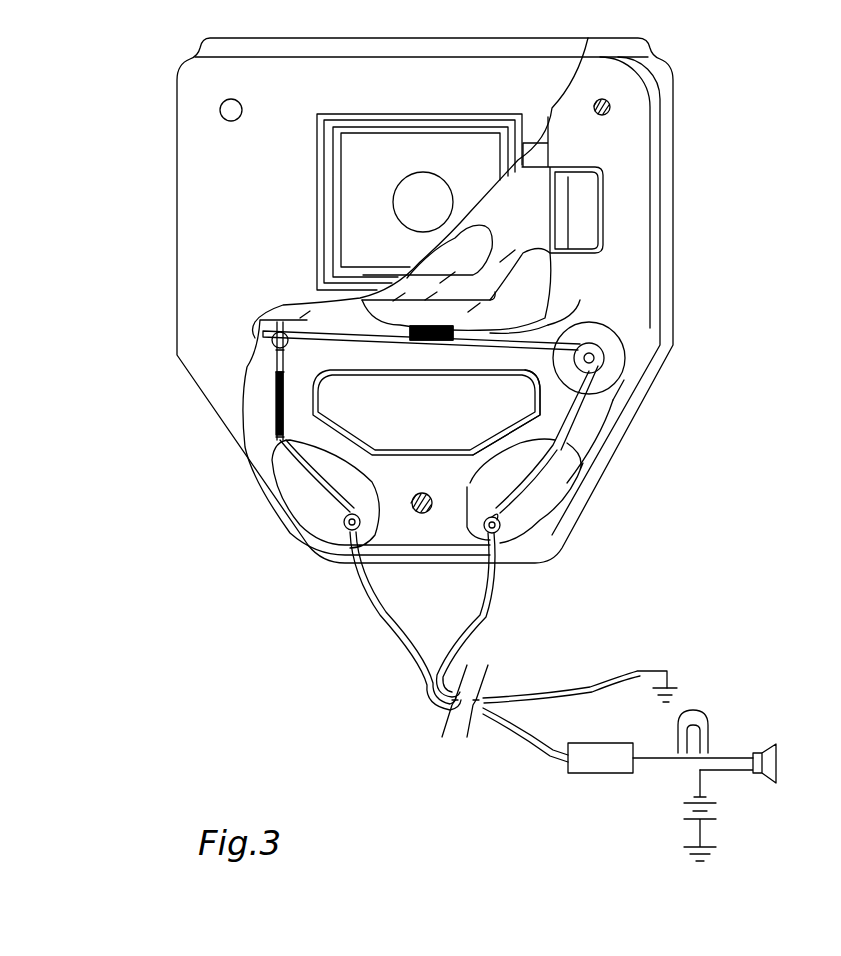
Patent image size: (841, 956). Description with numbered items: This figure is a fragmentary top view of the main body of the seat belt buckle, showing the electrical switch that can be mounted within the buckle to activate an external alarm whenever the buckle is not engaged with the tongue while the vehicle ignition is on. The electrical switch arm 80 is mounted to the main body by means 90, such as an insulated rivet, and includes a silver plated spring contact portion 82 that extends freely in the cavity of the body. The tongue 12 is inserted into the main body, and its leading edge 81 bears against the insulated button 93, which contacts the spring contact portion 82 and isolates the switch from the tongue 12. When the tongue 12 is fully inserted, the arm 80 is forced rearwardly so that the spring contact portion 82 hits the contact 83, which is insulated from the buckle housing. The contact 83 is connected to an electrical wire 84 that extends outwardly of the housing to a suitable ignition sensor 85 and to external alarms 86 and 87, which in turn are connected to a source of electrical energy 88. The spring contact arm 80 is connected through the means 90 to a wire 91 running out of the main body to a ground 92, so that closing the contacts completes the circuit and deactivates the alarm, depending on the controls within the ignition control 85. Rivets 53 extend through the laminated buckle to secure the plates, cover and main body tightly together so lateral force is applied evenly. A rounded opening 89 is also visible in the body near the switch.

The tongue 12 is at (542, 270).
The leading edge of tongue 81 is at (555, 322).
The mounting means 90 is at (604, 357).
The contact 83 is at (272, 332).
The spring contact portion 82 is at (350, 338).
The insulated button 93 is at (420, 342).
The electrical switch arm 80 is at (463, 340).
The opening 89 is at (528, 345).
The wire 91 is at (553, 472).
The electrical wire 84 is at (282, 446).
The rivets 53 is at (421, 515).
The ground 92 is at (678, 688).
The external alarm 87 is at (733, 752).
The ignition sensor 85 is at (568, 770).
The external alarm 86 is at (657, 772).
The source of electrical energy 88 is at (717, 820).